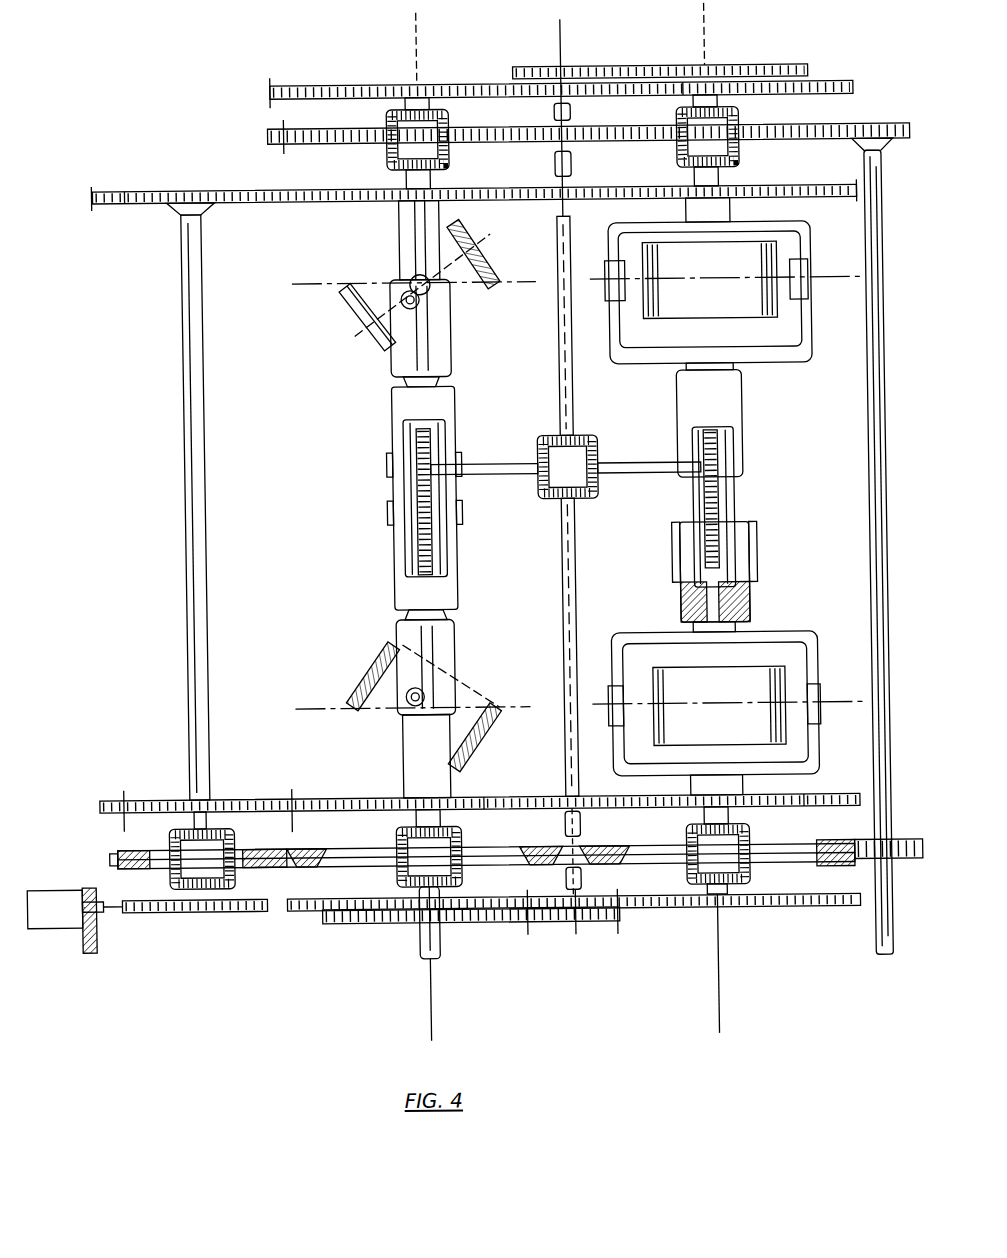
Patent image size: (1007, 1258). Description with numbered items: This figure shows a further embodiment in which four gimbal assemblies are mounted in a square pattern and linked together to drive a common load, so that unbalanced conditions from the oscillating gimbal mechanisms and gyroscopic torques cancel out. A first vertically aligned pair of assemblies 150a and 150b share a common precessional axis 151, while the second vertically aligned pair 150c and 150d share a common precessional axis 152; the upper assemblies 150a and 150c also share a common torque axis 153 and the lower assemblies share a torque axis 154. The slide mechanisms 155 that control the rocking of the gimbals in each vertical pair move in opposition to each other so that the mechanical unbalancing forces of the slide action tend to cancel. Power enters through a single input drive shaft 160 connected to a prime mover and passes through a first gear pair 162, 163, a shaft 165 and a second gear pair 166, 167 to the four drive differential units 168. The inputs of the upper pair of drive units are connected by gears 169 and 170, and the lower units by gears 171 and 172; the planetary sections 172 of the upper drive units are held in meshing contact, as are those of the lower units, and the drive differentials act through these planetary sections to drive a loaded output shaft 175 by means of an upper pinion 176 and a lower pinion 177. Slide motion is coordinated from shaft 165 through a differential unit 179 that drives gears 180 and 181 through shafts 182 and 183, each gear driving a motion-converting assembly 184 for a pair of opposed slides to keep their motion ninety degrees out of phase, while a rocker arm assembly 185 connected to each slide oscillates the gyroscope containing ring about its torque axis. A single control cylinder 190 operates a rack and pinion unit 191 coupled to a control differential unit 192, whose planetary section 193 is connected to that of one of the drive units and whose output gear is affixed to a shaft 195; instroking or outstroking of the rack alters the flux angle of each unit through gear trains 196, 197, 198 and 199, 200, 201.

The gimbal assembly 150a is at (348, 328).
The gimbal assembly 150b is at (367, 661).
The gimbal assembly 150c is at (782, 365).
The gimbal assembly 150d is at (759, 635).
The precessional axis 151 is at (427, 1005).
The precessional axis 152 is at (716, 967).
The torque axis 153 is at (326, 278).
The torque axis 154 is at (313, 710).
The slide mechanism 155 is at (465, 350).
The input drive shaft 160 is at (422, 941).
The gear 162 is at (447, 917).
The gear 163 is at (572, 916).
The shaft 165 is at (560, 398).
The gear 166 is at (583, 78).
The gear 167 is at (747, 68).
The drive differential unit 168 is at (394, 158).
The gear 169 is at (347, 88).
The gear 170 is at (690, 90).
The gear 171 is at (306, 903).
The planetary section 172 is at (294, 130).
The loaded output shaft 175 is at (878, 544).
The upper pinion 176 is at (868, 132).
The lower pinion 177 is at (900, 863).
The differential unit 179 is at (582, 501).
The gear 180 is at (412, 439).
The gear 181 is at (720, 454).
The shaft 182 is at (500, 475).
The shaft 183 is at (613, 456).
The motion-converting assembly 184 is at (739, 464).
The rocker arm assembly 185 is at (459, 262).
The control cylinder 190 is at (56, 918).
The rack and pinion unit 191 is at (194, 918).
The control differential unit 192 is at (240, 872).
The planetary section 193 is at (135, 851).
The shaft 195 is at (191, 507).
The gear train 196 is at (141, 794).
The gear train 197 is at (478, 806).
The gear train 198 is at (797, 800).
The gear train 199 is at (150, 201).
The gear train 200 is at (361, 205).
The gear train 201 is at (774, 188).